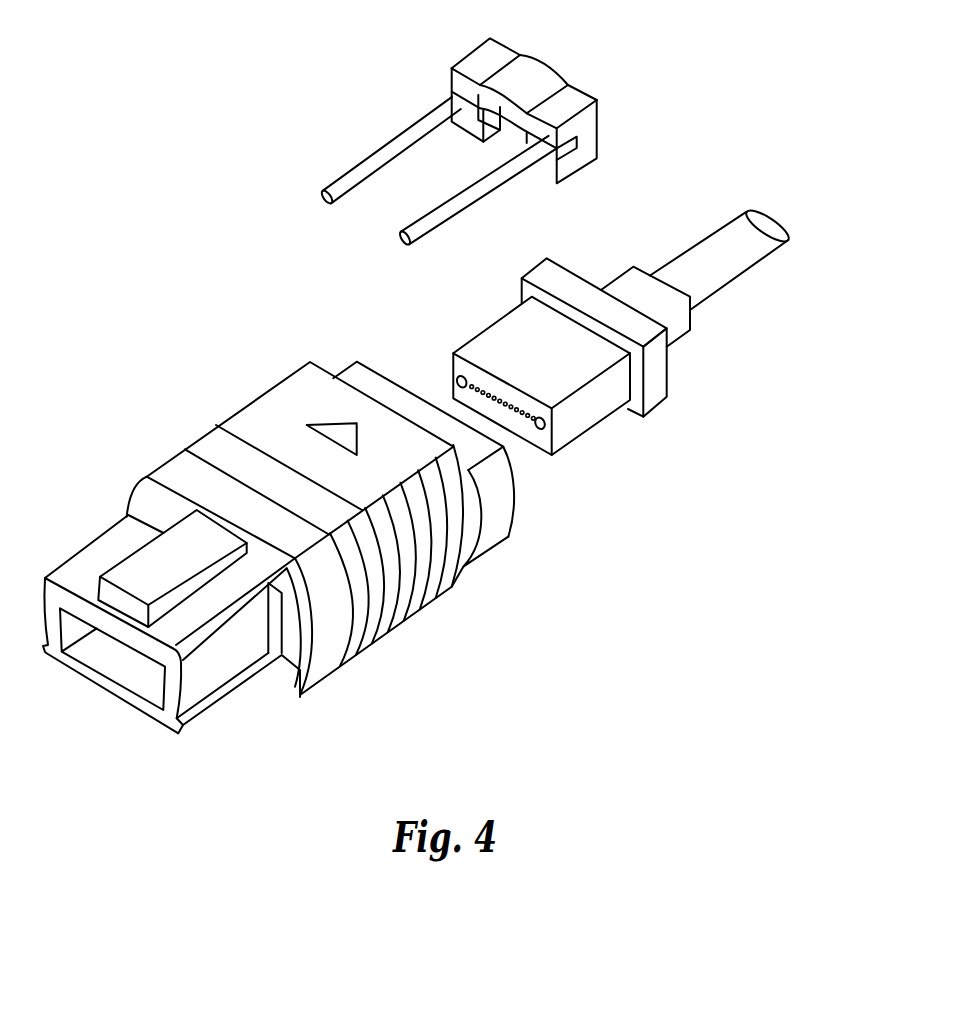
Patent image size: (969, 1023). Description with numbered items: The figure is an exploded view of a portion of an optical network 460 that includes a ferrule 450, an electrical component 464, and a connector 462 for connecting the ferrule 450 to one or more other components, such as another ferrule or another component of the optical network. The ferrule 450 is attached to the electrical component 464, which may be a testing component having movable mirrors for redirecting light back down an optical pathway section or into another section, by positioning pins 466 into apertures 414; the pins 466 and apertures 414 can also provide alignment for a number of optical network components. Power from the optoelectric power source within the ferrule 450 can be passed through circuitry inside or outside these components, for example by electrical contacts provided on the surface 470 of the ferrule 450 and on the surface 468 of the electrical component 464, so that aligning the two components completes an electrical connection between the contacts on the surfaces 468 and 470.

The ferrule 450 is at (498, 323).
The apertures 414 is at (455, 384).
The surface of the ferrule 470 is at (520, 429).
The optical network 460 is at (853, 328).
The connector 462 is at (253, 404).
The electrical component 464 is at (473, 57).
The pins 466 is at (393, 143).
The surface of the electrical component 468 is at (602, 92).